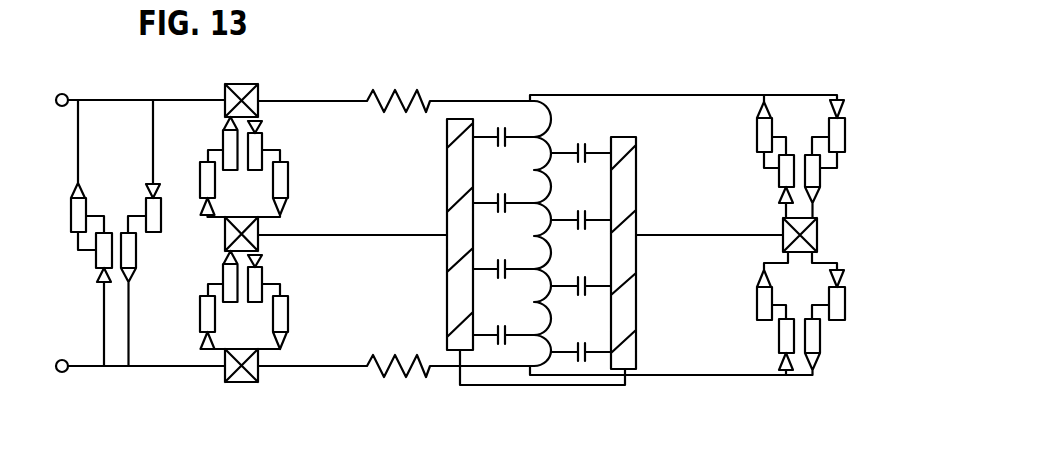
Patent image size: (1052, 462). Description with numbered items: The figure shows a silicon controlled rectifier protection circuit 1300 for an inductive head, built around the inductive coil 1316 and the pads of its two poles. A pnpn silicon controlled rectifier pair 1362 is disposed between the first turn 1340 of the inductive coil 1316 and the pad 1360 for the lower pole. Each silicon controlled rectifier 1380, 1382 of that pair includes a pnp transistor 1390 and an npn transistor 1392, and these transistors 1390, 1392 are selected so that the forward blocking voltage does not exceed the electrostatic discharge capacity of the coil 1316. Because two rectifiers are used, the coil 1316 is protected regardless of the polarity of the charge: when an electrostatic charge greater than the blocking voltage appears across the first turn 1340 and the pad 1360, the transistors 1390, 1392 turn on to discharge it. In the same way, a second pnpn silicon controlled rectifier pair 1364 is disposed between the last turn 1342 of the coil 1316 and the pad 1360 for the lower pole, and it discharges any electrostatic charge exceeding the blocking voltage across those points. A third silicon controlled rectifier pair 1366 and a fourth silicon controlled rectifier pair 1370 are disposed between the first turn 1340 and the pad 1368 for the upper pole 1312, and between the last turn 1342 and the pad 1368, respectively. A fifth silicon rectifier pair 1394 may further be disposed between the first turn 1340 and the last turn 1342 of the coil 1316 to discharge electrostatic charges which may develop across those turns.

The silicon controlled rectifier protection circuit 1300 is at (642, 241).
The upper pole 1312 is at (636, 157).
The inductive coil 1316 is at (525, 371).
The first turn 1340 is at (308, 100).
The last turn 1342 is at (320, 367).
The pad for the lower pole 1360 is at (259, 246).
The pnpn silicon controlled rectifier pair 1362 is at (248, 181).
The second pnpn silicon controlled rectifier pair 1364 is at (313, 297).
The third silicon controlled rectifier pair 1366 is at (853, 117).
The pad for the upper pole 1368 is at (820, 222).
The fourth silicon controlled rectifier pair 1370 is at (748, 294).
The silicon controlled rectifier 1380 is at (295, 181).
The silicon controlled rectifier 1382 is at (191, 186).
The pnp transistor 1390 is at (222, 142).
The npn transistor 1392 is at (197, 168).
The fifth silicon rectifier pair 1394 is at (66, 227).